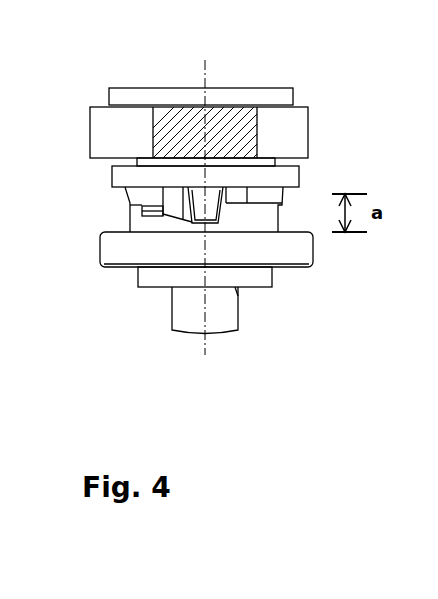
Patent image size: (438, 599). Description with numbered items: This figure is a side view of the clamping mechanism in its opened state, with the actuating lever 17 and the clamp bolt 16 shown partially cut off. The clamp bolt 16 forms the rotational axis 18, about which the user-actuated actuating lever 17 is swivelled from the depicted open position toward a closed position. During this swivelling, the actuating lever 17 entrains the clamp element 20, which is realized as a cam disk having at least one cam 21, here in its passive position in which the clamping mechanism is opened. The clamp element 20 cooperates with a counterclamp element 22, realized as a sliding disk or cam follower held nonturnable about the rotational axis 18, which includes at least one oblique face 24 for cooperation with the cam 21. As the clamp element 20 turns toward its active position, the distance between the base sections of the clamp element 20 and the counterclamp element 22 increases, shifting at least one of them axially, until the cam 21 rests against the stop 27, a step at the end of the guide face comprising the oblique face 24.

The clamp bolt 16 is at (180, 313).
The actuating lever 17 is at (290, 123).
The rotational axis 18 is at (205, 82).
The clamp element 20 is at (303, 167).
The cam 21 is at (200, 202).
The counterclamp element 22 is at (293, 252).
The oblique face 24 is at (189, 213).
The stop 27 is at (142, 212).